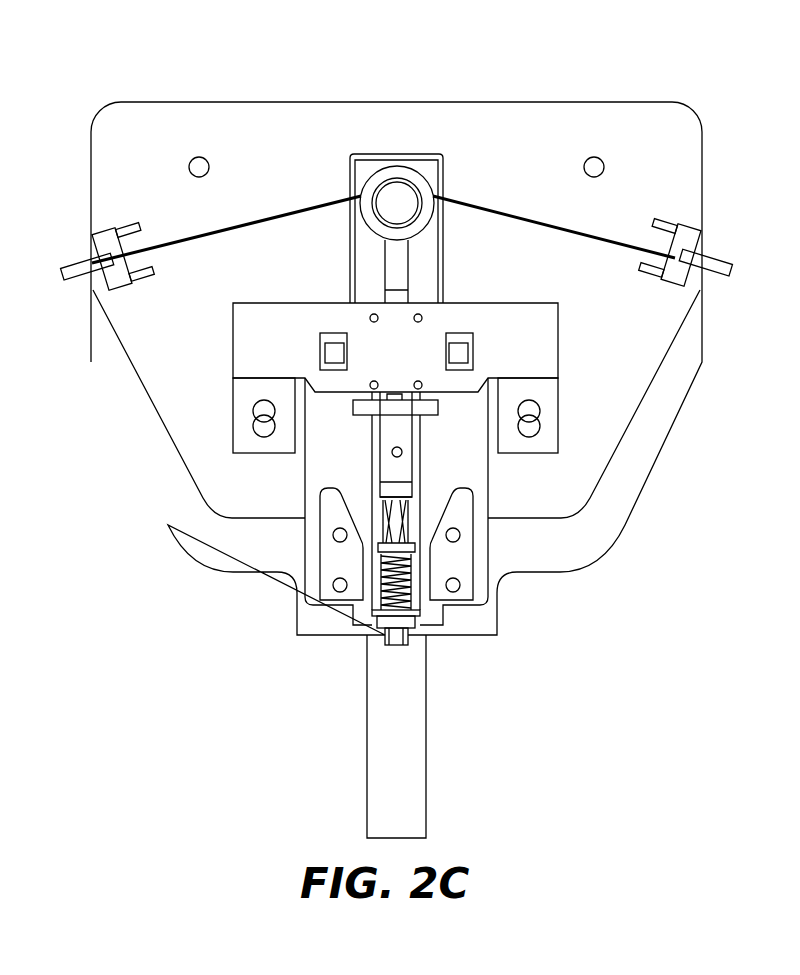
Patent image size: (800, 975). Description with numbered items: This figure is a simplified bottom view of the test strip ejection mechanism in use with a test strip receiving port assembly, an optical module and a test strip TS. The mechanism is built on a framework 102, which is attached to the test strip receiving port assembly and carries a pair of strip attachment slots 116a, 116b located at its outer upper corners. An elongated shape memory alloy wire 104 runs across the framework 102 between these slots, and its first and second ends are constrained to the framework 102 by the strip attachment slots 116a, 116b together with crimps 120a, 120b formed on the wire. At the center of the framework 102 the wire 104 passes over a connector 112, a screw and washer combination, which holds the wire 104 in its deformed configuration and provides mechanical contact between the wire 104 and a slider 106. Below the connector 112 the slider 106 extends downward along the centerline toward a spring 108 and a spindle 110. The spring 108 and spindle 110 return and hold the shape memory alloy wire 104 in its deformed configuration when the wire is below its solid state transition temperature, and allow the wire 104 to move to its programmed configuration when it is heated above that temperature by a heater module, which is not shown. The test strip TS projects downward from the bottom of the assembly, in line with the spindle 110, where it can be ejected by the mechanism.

The framework 102 is at (658, 143).
The elongated shape memory alloy wire 104 is at (523, 218).
The slider 106 is at (401, 456).
The spring 108 is at (382, 580).
The spindle 110 is at (390, 640).
The connector 112 is at (397, 203).
The strip attachment slot 116a is at (683, 245).
The strip attachment slot 116b is at (107, 232).
The crimp 120a is at (717, 258).
The crimp 120b is at (77, 262).
The test strip TS is at (400, 787).